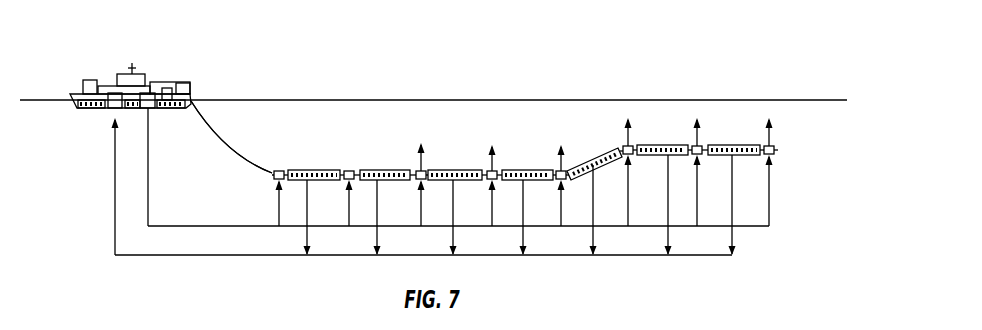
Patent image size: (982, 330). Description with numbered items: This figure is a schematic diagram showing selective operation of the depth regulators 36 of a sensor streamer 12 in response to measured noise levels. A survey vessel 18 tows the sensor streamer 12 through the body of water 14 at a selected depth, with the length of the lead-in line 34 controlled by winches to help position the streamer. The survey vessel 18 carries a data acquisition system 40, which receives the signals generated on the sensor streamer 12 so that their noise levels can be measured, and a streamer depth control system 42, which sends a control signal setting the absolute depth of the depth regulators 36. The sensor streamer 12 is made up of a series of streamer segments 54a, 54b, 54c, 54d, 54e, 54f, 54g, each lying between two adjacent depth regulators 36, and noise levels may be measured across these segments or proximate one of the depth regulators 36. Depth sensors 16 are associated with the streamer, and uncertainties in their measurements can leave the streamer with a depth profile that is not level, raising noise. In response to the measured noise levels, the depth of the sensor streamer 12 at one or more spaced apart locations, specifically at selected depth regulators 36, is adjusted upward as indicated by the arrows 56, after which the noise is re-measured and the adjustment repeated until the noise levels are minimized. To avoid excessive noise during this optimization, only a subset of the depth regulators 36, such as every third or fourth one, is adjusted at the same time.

The sensor streamer 12 is at (251, 157).
The body of water 14 is at (840, 137).
The depth sensors 16 is at (277, 181).
The survey vessel 18 is at (163, 69).
The lead-in line 34 is at (218, 141).
The depth regulators 36 is at (283, 170).
The data acquisition system 40 is at (116, 86).
The streamer depth control system 42 is at (152, 85).
The streamer segment 54a is at (330, 170).
The streamer segment 54b is at (378, 170).
The streamer segment 54c is at (454, 170).
The streamer segment 54d is at (525, 170).
The streamer segment 54e is at (593, 163).
The streamer segment 54f is at (672, 145).
The streamer segment 54g is at (752, 145).
The arrows 56 is at (418, 158).